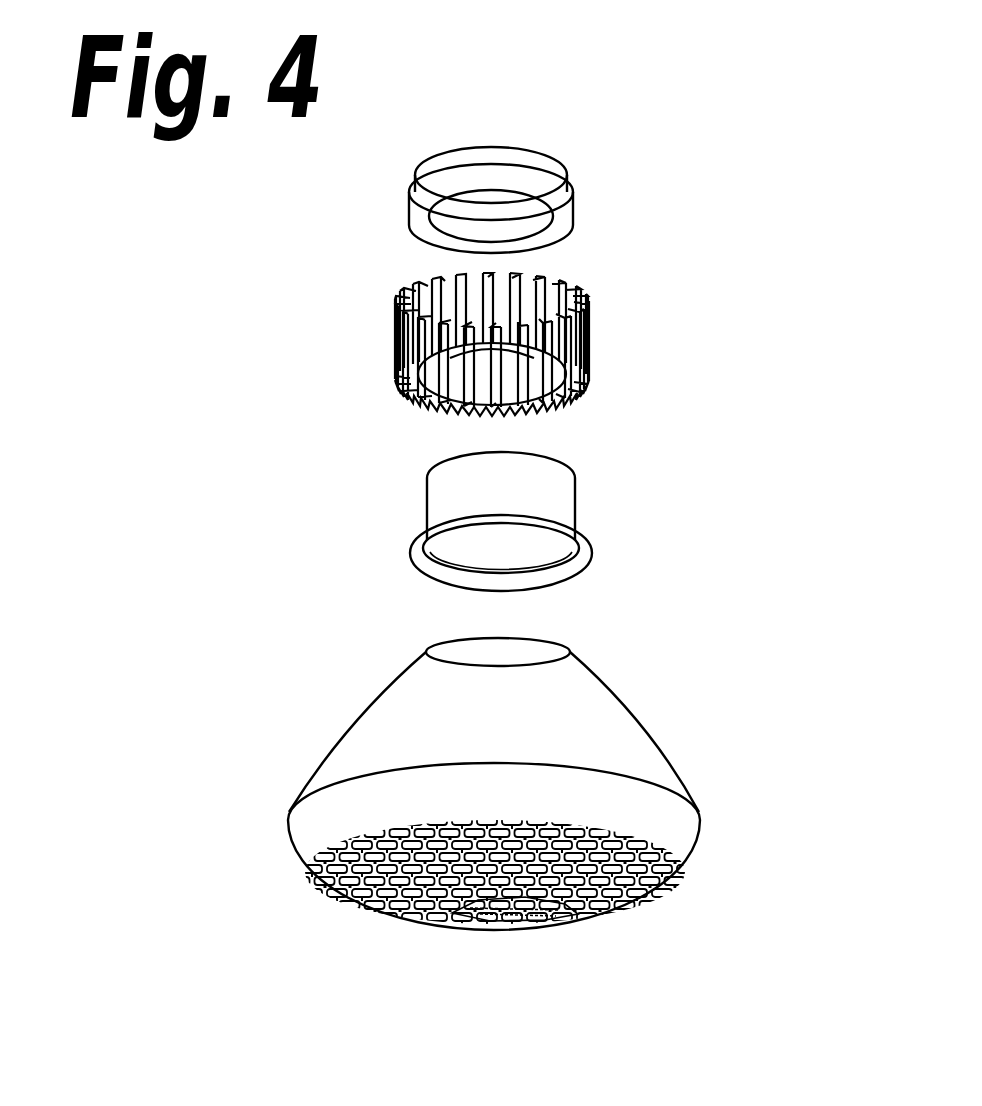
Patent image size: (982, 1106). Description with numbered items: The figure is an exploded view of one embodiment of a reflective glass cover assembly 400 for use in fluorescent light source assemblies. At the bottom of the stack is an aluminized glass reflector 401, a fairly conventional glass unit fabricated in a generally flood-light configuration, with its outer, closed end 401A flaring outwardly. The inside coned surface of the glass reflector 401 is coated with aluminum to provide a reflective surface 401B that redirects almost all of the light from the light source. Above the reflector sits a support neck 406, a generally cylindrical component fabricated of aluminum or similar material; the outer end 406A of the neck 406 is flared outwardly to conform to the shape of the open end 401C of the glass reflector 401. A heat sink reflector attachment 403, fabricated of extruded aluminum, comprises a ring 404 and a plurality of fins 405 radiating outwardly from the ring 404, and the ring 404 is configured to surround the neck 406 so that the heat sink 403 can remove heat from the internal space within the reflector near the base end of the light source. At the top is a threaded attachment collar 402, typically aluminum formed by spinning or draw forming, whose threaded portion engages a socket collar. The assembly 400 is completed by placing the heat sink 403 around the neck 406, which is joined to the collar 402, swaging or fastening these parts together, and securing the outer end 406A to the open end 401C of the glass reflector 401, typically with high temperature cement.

The reflective glass cover assembly 400 is at (231, 188).
The aluminized glass reflector 401 is at (568, 782).
The outer closed end 401A is at (483, 903).
The reflective surface 401B is at (570, 708).
The open end of the glass reflector 401C is at (543, 645).
The threaded attachment collar 402 is at (403, 208).
The heat sink reflector attachment 403 is at (474, 362).
The ring 404 is at (537, 378).
The fins 405 is at (600, 322).
The support neck 406 is at (421, 539).
The outer end of the neck 406A is at (443, 572).